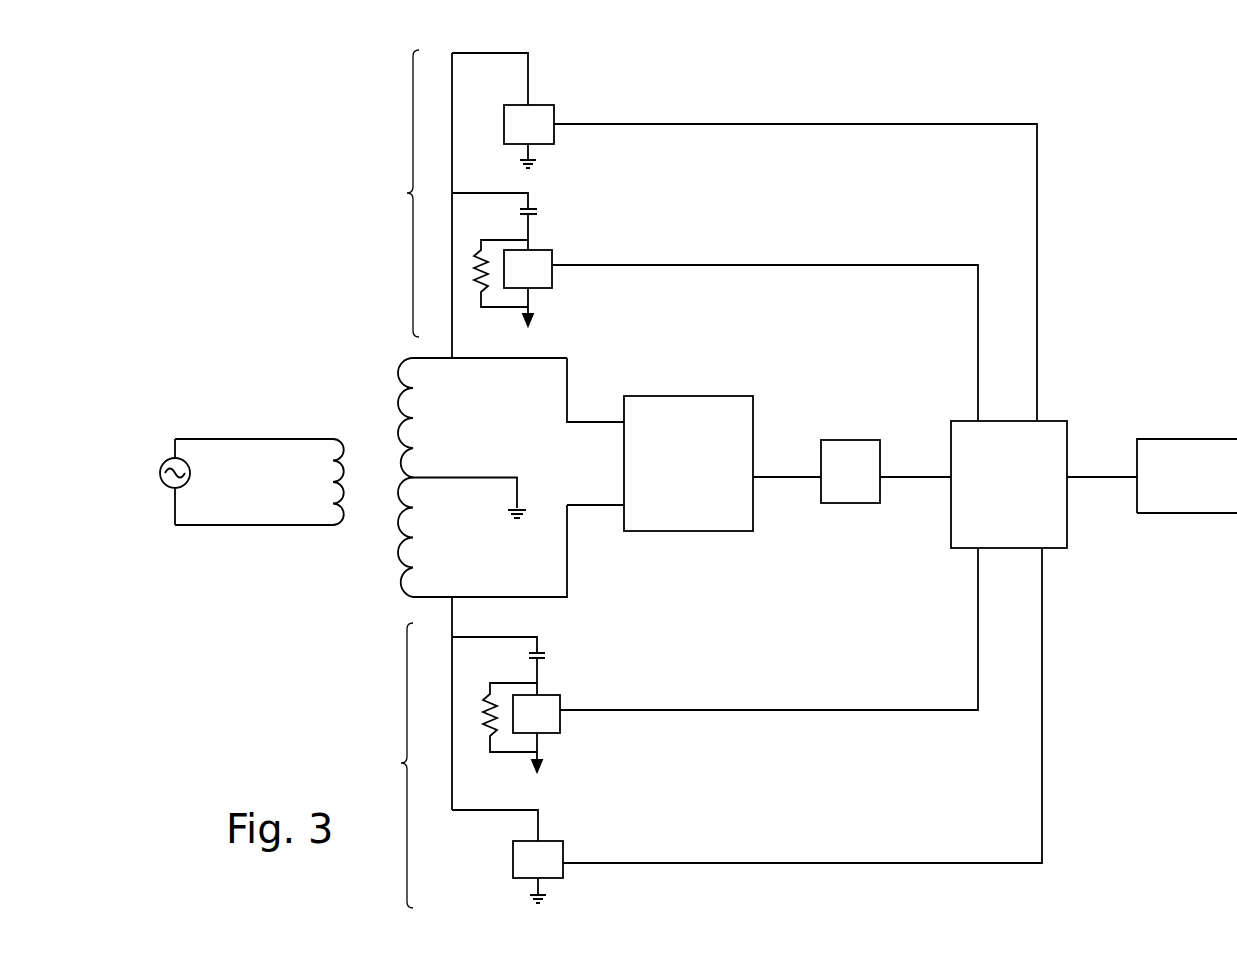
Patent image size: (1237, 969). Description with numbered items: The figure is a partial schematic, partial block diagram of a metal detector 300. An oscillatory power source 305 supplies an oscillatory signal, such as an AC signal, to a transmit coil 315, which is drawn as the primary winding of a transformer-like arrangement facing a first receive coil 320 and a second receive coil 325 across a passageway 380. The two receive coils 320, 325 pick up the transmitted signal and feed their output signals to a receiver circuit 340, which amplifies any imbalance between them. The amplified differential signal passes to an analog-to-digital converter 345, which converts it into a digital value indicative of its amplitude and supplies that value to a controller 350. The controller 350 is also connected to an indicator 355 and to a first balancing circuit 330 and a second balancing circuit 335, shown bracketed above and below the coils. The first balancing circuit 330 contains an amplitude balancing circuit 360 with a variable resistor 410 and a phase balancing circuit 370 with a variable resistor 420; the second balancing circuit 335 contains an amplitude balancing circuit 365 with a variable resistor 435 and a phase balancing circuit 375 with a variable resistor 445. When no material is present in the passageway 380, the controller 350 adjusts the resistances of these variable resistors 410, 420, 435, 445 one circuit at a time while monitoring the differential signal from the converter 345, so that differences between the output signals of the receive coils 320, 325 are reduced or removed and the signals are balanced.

The metal detector 300 is at (312, 214).
The oscillatory power source 305 is at (162, 458).
The transmit coil 315 is at (333, 460).
The first receive coil 320 is at (413, 422).
The second receive coil 325 is at (415, 539).
The first balancing circuit 330 is at (386, 193).
The second balancing circuit 335 is at (378, 765).
The receiver circuit 340 is at (707, 393).
The analog-to-digital (A/D) converter 345 is at (858, 438).
The controller 350 is at (932, 544).
The indicator 355 is at (1182, 437).
The first amplitude balancing circuit 360 is at (744, 237).
The second amplitude balancing circuit 365 is at (747, 730).
The first phase balancing circuit 370 is at (715, 307).
The second phase balancing circuit 375 is at (715, 660).
The passageway 380 is at (367, 392).
The variable resistor 410 is at (552, 136).
The variable resistor 420 is at (552, 275).
The variable resistor 435 is at (563, 873).
The variable resistor 445 is at (560, 733).